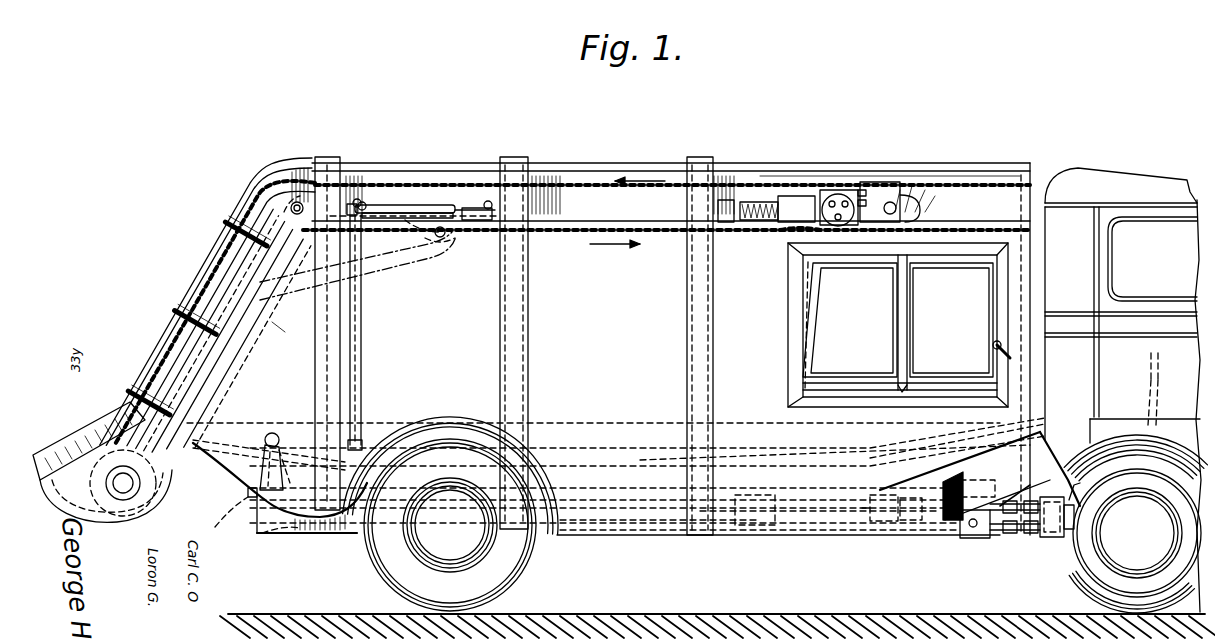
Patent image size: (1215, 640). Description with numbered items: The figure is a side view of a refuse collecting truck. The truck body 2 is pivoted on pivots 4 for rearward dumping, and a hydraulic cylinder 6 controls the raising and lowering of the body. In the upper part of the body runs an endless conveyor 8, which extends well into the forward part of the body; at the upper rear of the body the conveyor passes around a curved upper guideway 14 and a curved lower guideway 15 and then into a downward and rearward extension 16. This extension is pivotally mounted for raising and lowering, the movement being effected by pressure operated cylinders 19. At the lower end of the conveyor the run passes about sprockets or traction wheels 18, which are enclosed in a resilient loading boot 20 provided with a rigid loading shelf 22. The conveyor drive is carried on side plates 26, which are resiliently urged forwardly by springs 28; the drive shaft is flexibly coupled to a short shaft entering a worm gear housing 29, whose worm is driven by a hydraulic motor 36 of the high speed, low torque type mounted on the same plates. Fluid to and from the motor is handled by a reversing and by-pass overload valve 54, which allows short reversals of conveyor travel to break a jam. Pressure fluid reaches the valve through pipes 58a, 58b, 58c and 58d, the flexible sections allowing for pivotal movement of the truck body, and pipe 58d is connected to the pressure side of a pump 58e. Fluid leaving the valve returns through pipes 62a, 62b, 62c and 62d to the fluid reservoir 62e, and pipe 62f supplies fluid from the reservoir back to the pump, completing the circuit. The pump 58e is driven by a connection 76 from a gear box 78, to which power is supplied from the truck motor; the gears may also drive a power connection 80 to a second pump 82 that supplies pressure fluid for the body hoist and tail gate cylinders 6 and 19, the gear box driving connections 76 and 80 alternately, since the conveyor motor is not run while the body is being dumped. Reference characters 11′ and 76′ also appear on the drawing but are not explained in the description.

The truck body 2 is at (697, 385).
The pivots 4 is at (274, 432).
The hydraulic cylinder 6 is at (578, 234).
The endless conveyor 8 is at (598, 180).
The top rail 11′ is at (1005, 208).
The upper guideway 14 is at (286, 178).
The lower guideway 15 is at (268, 320).
The downward and rearward extension 16 is at (188, 290).
The sprockets or traction wheels 18 is at (142, 496).
The pressure operated cylinders 19 is at (446, 238).
The resilient loading boot 20 is at (150, 479).
The rigid loading shelf 22 is at (62, 442).
The side plates 26 is at (792, 198).
The springs 28 is at (746, 196).
The worm gear housing 29 is at (800, 230).
The hydraulic motor 36 is at (893, 184).
The reversing and by-pass overload valve 54 is at (510, 202).
The pressure pipe 58a is at (392, 202).
The pressure pipe 58b is at (360, 353).
The flexible pressure pipe 58c is at (235, 516).
The pressure pipe 58d is at (796, 540).
The pump 58e is at (987, 542).
The return pipe 62a is at (445, 206).
The return pipe 62b is at (356, 312).
The flexible return pipe 62c is at (288, 525).
The return pipe 62d is at (690, 536).
The fluid reservoir 62e is at (772, 520).
The supply pipe 62f is at (882, 536).
The connection 76 is at (1030, 534).
The drive shaft extension 76′ is at (390, 262).
The gear box 78 is at (1058, 538).
The power connection 80 is at (1000, 506).
The pump 82 is at (928, 470).